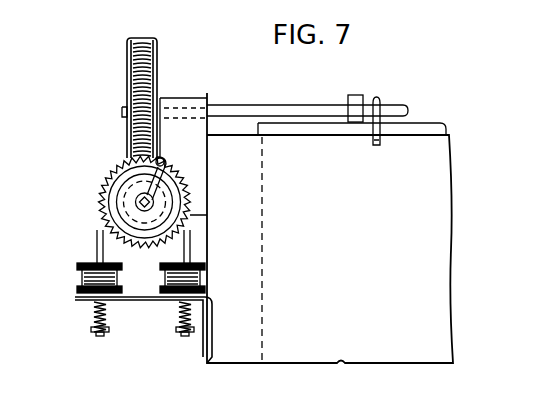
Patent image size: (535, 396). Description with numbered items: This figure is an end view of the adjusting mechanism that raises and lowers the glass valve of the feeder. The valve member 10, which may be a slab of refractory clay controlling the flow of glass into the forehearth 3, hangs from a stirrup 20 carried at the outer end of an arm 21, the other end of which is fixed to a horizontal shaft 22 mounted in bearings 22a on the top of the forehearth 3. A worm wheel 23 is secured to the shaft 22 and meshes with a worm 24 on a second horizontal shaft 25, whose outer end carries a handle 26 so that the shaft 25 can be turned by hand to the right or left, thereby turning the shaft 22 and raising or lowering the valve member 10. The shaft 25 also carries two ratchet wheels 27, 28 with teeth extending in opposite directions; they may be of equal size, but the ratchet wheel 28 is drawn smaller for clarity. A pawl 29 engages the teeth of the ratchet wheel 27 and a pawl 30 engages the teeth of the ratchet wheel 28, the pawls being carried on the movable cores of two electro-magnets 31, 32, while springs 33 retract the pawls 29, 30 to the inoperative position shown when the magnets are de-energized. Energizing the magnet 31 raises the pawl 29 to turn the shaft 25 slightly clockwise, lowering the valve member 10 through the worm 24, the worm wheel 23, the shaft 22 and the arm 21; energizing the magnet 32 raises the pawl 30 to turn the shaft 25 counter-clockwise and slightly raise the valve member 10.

The forehearth 3 is at (440, 198).
The valve member 10 is at (424, 122).
The stirrup 20 is at (378, 100).
The arm 21 is at (356, 95).
The horizontal shaft 22 is at (278, 100).
The bearings 22a is at (198, 80).
The worm wheel 23 is at (128, 63).
The worm 24 is at (96, 215).
The horizontal shaft 25 is at (124, 208).
The handle 26 is at (166, 162).
The ratchet wheel 27 is at (110, 172).
The ratchet wheel 28 is at (117, 196).
The pawl 29 is at (97, 243).
The pawl 30 is at (191, 243).
The electro-magnet 31 is at (77, 280).
The electro-magnet 32 is at (160, 280).
The springs 33 is at (92, 317).